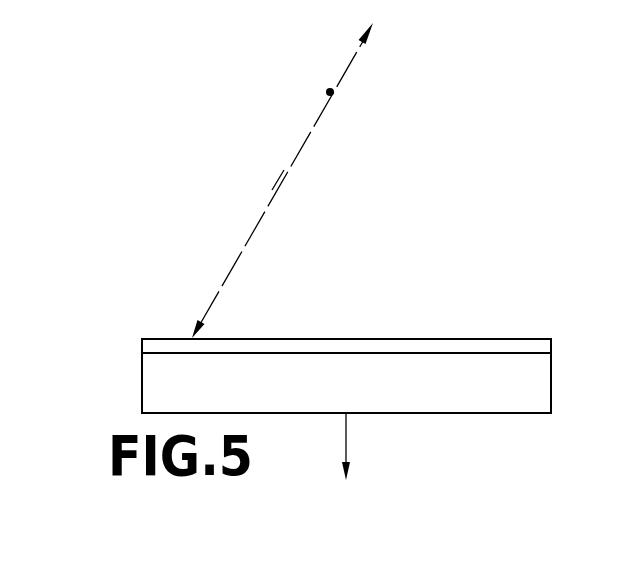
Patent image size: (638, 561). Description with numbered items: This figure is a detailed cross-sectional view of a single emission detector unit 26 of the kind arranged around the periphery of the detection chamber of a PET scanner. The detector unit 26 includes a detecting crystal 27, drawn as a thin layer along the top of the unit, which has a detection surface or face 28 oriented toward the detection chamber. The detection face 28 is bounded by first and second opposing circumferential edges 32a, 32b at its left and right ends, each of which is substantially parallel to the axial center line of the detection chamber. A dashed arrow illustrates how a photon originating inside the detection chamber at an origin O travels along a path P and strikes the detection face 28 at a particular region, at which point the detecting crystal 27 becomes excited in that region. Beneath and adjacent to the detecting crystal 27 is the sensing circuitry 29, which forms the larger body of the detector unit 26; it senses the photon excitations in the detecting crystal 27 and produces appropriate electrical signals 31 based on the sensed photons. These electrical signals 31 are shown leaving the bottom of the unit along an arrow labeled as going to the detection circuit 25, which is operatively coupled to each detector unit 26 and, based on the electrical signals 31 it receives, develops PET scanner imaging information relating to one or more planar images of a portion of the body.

The detection circuit 25 is at (445, 518).
The emission detector unit 26 is at (390, 180).
The detecting crystal 27 is at (355, 344).
The detection surface 28 is at (162, 338).
The sensing circuitry 29 is at (472, 383).
The electrical signals 31 is at (350, 420).
The first circumferential edge 32a is at (152, 345).
The second circumferential edge 32b is at (538, 340).
The origin O is at (334, 94).
The path P is at (278, 180).